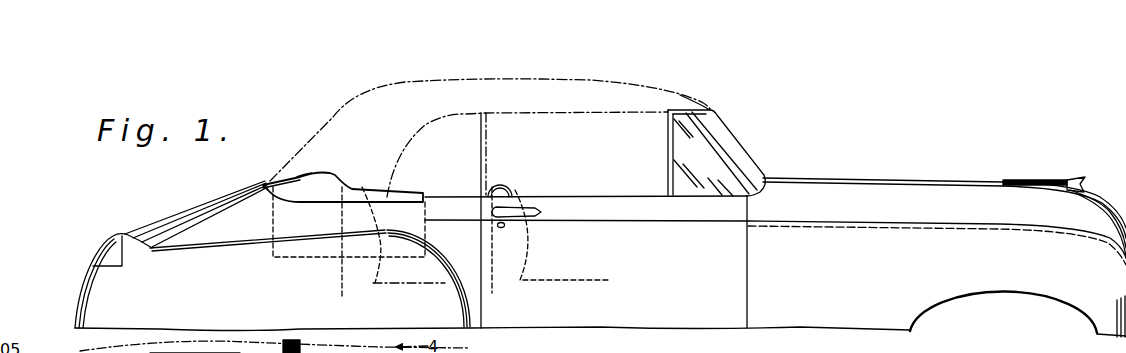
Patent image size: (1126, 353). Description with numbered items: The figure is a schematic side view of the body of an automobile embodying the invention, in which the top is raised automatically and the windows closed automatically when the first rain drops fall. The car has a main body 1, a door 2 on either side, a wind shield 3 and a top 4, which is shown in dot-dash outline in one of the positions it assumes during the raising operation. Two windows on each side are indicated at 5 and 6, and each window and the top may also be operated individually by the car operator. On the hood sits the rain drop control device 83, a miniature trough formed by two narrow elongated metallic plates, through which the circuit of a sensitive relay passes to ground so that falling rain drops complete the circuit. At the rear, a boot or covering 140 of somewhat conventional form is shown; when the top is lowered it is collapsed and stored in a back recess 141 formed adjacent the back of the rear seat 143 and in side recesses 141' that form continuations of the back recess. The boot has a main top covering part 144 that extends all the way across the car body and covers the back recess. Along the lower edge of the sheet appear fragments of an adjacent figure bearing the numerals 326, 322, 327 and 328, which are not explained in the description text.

The main body 1 is at (653, 236).
The door 2 is at (648, 293).
The wind shield 3 is at (730, 151).
The top 4 is at (597, 77).
The window 5 is at (591, 187).
The window 6 is at (452, 183).
The rain drop control device 83 is at (1018, 179).
The boot or covering 140 is at (346, 174).
The back recess 141 is at (348, 244).
The side recesses 141' is at (403, 253).
The rear seat 143 is at (355, 257).
The main top covering part 144 is at (298, 178).
The element of adjacent figure 326 is at (146, 345).
The element of adjacent figure 322 is at (260, 347).
The element of adjacent figure 327 is at (297, 344).
The element of adjacent figure 328 is at (502, 347).